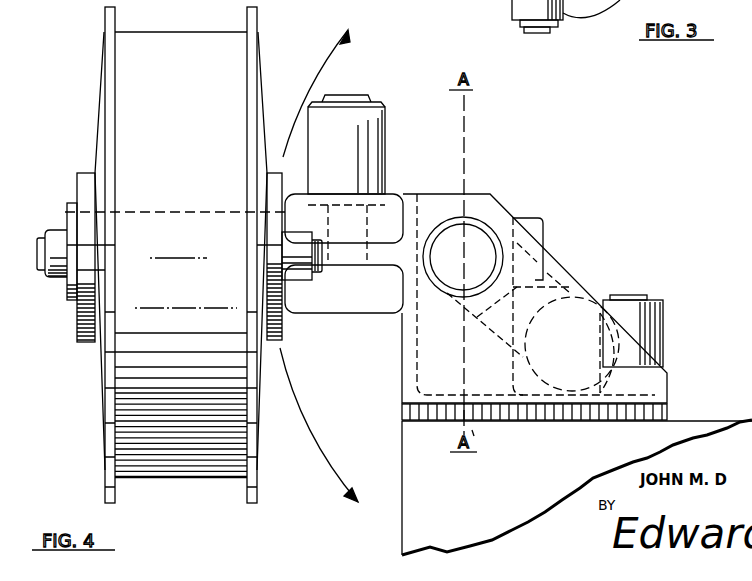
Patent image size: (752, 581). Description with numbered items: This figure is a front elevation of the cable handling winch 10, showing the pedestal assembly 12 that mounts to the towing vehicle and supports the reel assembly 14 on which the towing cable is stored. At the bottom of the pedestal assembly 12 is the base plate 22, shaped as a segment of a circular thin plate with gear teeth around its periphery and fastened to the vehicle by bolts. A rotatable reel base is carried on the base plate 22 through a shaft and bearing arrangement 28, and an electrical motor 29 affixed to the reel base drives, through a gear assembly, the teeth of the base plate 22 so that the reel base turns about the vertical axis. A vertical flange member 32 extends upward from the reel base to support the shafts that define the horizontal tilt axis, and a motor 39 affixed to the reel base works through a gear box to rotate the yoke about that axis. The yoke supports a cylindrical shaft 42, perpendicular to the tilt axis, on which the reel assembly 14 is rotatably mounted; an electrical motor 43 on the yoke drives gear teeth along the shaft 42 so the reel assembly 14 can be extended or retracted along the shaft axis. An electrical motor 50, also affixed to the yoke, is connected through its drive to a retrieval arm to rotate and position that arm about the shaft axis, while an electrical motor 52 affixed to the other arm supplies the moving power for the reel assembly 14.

The winch 10 is at (614, 220).
The pedestal assembly 12 is at (448, 387).
The reel assembly 14 is at (200, 290).
The base plate 22 is at (517, 421).
The shaft and bearing arrangement 28 is at (455, 412).
The electrical motor 29 is at (640, 328).
The vertical flange member 32 is at (447, 341).
The motor 39 is at (583, 303).
The cylindrical shaft 42 is at (530, 224).
The electrical motor 43 is at (340, 162).
The electrical motor 50 is at (305, 262).
The electrical motor 52 is at (48, 281).